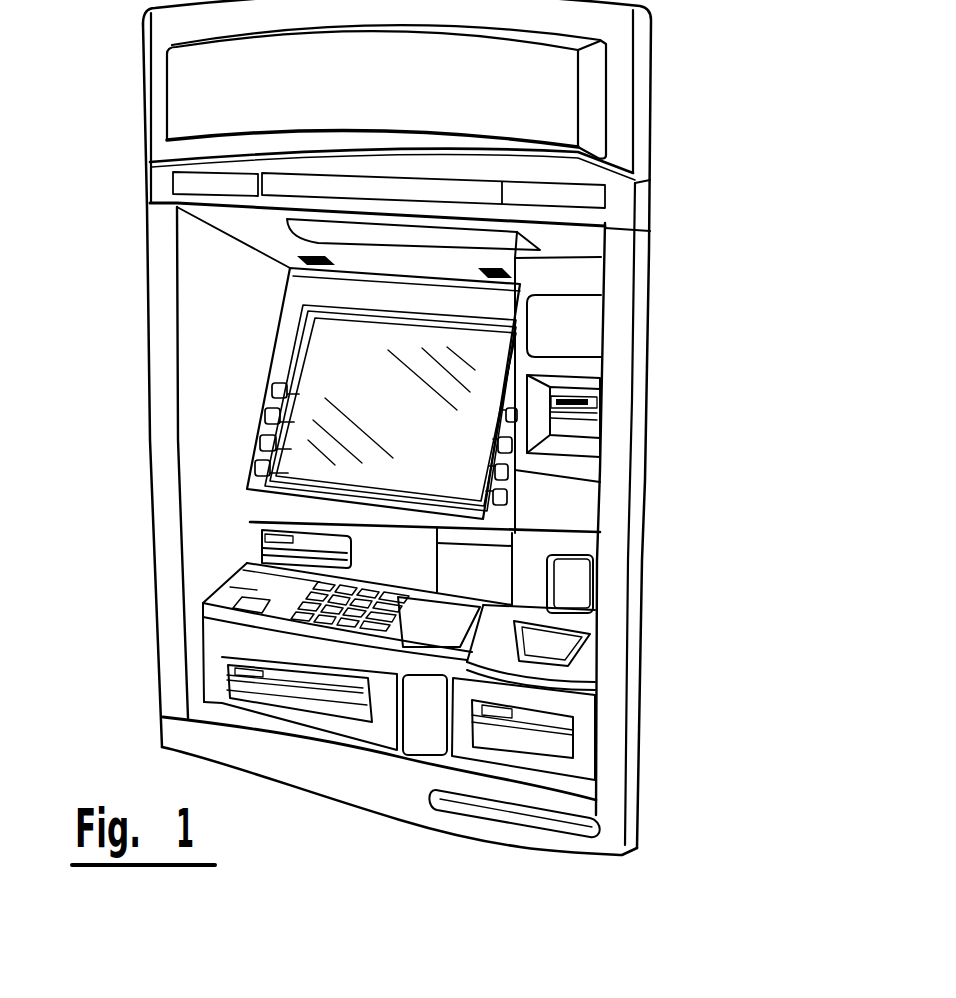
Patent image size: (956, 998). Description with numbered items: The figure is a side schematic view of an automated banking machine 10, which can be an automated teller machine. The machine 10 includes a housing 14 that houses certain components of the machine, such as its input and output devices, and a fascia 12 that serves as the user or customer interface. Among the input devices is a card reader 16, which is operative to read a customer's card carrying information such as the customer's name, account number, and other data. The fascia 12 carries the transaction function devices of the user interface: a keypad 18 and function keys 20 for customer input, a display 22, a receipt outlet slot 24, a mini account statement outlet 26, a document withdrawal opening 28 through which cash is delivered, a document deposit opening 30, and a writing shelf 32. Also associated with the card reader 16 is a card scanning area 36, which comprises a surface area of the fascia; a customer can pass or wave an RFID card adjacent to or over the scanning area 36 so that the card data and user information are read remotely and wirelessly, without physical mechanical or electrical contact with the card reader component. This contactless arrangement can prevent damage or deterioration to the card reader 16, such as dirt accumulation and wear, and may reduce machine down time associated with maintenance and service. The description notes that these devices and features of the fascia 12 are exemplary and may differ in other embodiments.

The automated banking machine 10 is at (688, 195).
The fascia 12 is at (190, 374).
The housing 14 is at (645, 467).
The card reader 16 is at (573, 570).
The keypad 18 is at (317, 617).
The function keys 20 is at (267, 393).
The display 22 is at (372, 372).
The receipt outlet slot 24 is at (597, 405).
The mini account statement outlet 26 is at (263, 553).
The document withdrawal opening 28 is at (262, 672).
The document deposit opening 30 is at (557, 738).
The writing shelf 32 is at (563, 820).
The card scanning area 36 is at (578, 598).